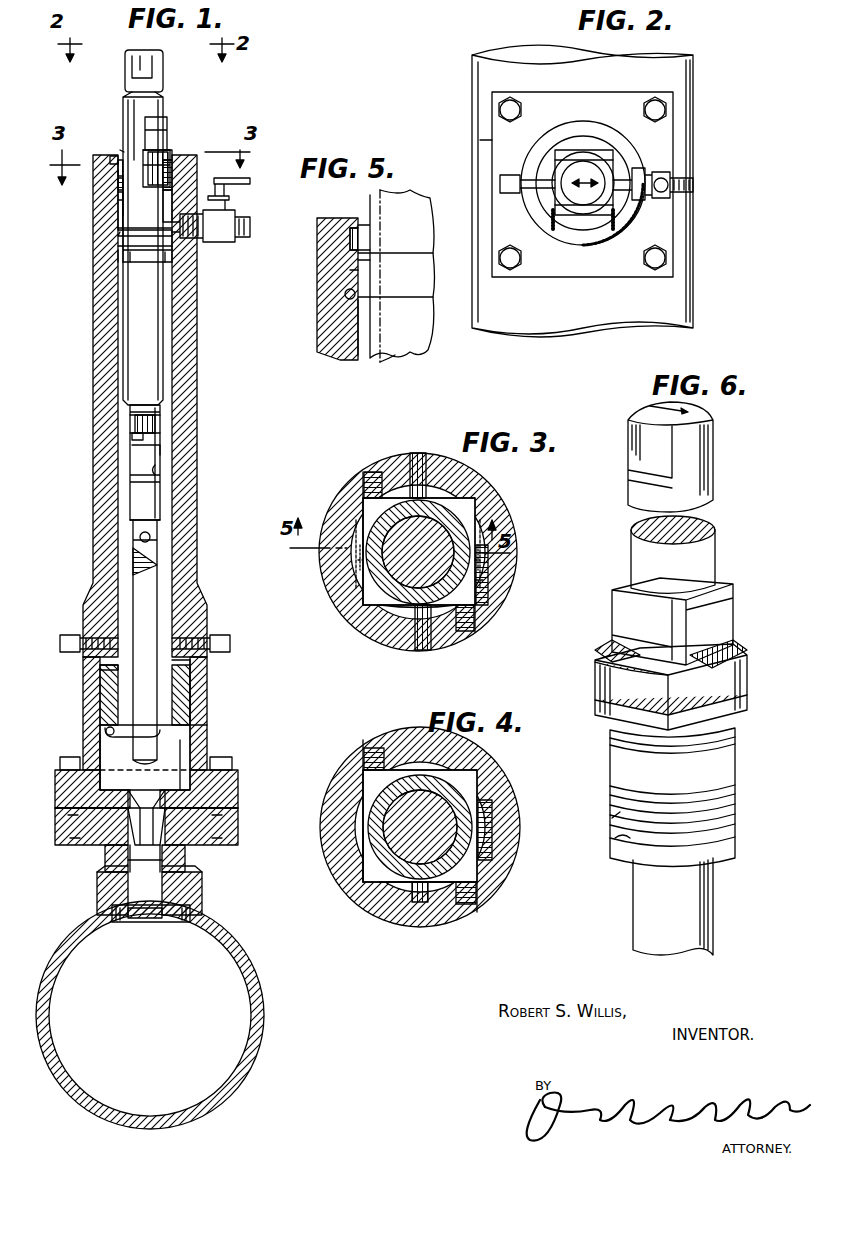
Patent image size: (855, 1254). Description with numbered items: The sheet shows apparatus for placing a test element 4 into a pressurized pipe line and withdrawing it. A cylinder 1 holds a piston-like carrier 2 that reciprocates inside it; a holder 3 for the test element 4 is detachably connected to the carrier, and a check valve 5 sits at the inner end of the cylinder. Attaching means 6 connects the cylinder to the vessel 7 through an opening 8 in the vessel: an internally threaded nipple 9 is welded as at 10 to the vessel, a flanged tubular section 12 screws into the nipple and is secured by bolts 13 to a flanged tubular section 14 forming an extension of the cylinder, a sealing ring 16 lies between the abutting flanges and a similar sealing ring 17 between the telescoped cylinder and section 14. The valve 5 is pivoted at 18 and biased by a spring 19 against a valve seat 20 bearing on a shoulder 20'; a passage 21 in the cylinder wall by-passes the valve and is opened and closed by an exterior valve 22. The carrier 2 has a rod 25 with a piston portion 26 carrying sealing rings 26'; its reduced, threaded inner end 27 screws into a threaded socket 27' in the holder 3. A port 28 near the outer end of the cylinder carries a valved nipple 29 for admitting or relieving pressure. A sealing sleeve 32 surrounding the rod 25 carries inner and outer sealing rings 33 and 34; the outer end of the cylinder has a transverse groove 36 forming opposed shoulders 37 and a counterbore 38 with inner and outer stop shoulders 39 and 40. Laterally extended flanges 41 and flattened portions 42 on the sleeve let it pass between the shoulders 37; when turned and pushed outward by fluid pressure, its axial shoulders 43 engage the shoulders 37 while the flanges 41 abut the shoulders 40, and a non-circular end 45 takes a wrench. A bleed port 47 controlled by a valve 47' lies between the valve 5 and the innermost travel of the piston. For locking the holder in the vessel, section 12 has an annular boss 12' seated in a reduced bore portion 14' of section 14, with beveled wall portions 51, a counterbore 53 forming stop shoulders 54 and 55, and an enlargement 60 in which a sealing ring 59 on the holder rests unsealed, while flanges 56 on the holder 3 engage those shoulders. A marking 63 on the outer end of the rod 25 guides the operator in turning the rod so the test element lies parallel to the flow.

In FIG. 1, the cylinder 1 is at (200, 448).
In FIG. 2, the cylinder 1 is at (585, 130).
In FIG. 5, the cylinder 1 is at (312, 264).
In FIG. 3, the cylinder 1 is at (318, 580).
In FIG. 4, the cylinder 1 is at (335, 762).
In FIG. 1, the piston-like carrier 2 is at (165, 360).
In FIG. 2, the piston-like carrier 2 is at (592, 165).
In FIG. 5, the piston-like carrier 2 is at (415, 366).
In FIG. 3, the piston-like carrier 2 is at (408, 580).
In FIG. 4, the piston-like carrier 2 is at (445, 820).
In FIG. 6, the piston-like carrier 2 is at (630, 886).
In FIG. 1, the holder 3 is at (163, 508).
In FIG. 1, the test element 4 is at (160, 588).
In FIG. 1, the check valve 5 is at (130, 725).
In FIG. 1, the attaching means 6 is at (52, 792).
In FIG. 2, the attaching means 6 is at (490, 140).
In FIG. 1, the vessel 7 is at (264, 1008).
In FIG. 2, the vessel 7 is at (680, 303).
In FIG. 1, the opening 8 is at (140, 918).
In FIG. 1, the nipple 9 is at (97, 883).
In FIG. 1, the weld 10 is at (95, 914).
In FIG. 1, the flanged tubular section 12 is at (162, 826).
In FIG. 1, the annular boss 12' is at (174, 765).
In FIG. 1, the bolts 13 is at (218, 758).
In FIG. 2, the bolts 13 is at (660, 108).
In FIG. 1, the flanged tubular section 14 is at (163, 786).
In FIG. 2, the flanged tubular section 14 is at (614, 184).
In FIG. 1, the reduced portion 14' is at (126, 789).
In FIG. 1, the sealing ring 16 is at (120, 822).
In FIG. 1, the sealing ring 17 is at (100, 668).
In FIG. 1, the pivot 18 is at (112, 736).
In FIG. 1, the spring 19 is at (100, 742).
In FIG. 1, the valve seat 20 is at (208, 695).
In FIG. 1, the shoulder 20' is at (83, 695).
In FIG. 1, the passage 21 is at (192, 680).
In FIG. 1, the valve 22 is at (205, 630).
In FIG. 1, the rod 25 is at (163, 112).
In FIG. 5, the rod 25 is at (388, 362).
In FIG. 6, the rod 25 is at (706, 878).
In FIG. 1, the piston portion 26 is at (116, 290).
In FIG. 6, the piston portion 26 is at (695, 827).
In FIG. 6, the sealing rings 26' is at (601, 837).
In FIG. 1, the inner end 27 is at (107, 429).
In FIG. 1, the threaded socket 27' is at (102, 453).
In FIG. 1, the port 28 is at (178, 245).
In FIG. 1, the valved nipple 29 is at (255, 223).
In FIG. 2, the valved nipple 29 is at (656, 165).
In FIG. 1, the sleeve 32 is at (178, 140).
In FIG. 2, the sleeve 32 is at (565, 152).
In FIG. 5, the sleeve 32 is at (435, 250).
In FIG. 3, the sleeve 32 is at (460, 510).
In FIG. 4, the sleeve 32 is at (458, 780).
In FIG. 6, the sleeve 32 is at (712, 768).
In FIG. 1, the sealing ring 33 is at (120, 150).
In FIG. 1, the sealing ring 34 is at (120, 232).
In FIG. 6, the sealing ring 34 is at (735, 736).
In FIG. 1, the transverse groove 36 is at (118, 172).
In FIG. 2, the transverse groove 36 is at (595, 235).
In FIG. 3, the transverse groove 36 is at (372, 472).
In FIG. 4, the transverse groove 36 is at (366, 750).
In FIG. 2, the shoulders 37 is at (552, 222).
In FIG. 3, the shoulders 37 is at (482, 605).
In FIG. 4, the shoulders 37 is at (482, 878).
In FIG. 1, the counterbore 38 is at (118, 200).
In FIG. 5, the counterbore 38 is at (350, 280).
In FIG. 3, the counterbore 38 is at (363, 520).
In FIG. 4, the counterbore 38 is at (358, 812).
In FIG. 1, the inner stop shoulder 39 is at (178, 195).
In FIG. 5, the inner stop shoulder 39 is at (350, 318).
In FIG. 3, the inner stop shoulder 39 is at (415, 612).
In FIG. 4, the inner stop shoulder 39 is at (358, 840).
In FIG. 1, the outer stop shoulder 40 is at (175, 152).
In FIG. 5, the outer stop shoulder 40 is at (350, 255).
In FIG. 1, the flanges 41 is at (174, 175).
In FIG. 5, the flanges 41 is at (345, 295).
In FIG. 3, the flanges 41 is at (356, 560).
In FIG. 4, the flanges 41 is at (440, 888).
In FIG. 6, the flanges 41 is at (608, 640).
In FIG. 1, the flattened portions 42 is at (163, 150).
In FIG. 3, the flattened portions 42 is at (432, 500).
In FIG. 6, the flattened portions 42 is at (634, 688).
In FIG. 5, the shoulders 43 is at (365, 262).
In FIG. 3, the shoulders 43 is at (480, 582).
In FIG. 4, the shoulders 43 is at (412, 886).
In FIG. 6, the shoulders 43 is at (740, 655).
In FIG. 2, the non-circular cross section 45 is at (575, 214).
In FIG. 6, the non-circular cross section 45 is at (735, 592).
In FIG. 1, the bleed port 47 is at (87, 629).
In FIG. 1, the valve 47' is at (128, 641).
In FIG. 1, the beveled wall portions 51 is at (158, 800).
In FIG. 1, the counterbore 53 is at (168, 855).
In FIG. 1, the stop shoulder 54 is at (120, 855).
In FIG. 1, the stop shoulder 55 is at (165, 818).
In FIG. 1, the flanges 56 is at (140, 445).
In FIG. 1, the sealing ring 59 is at (157, 472).
In FIG. 1, the enlargement 60 is at (162, 866).
In FIG. 2, the marking 63 is at (572, 178).
In FIG. 6, the marking 63 is at (695, 410).